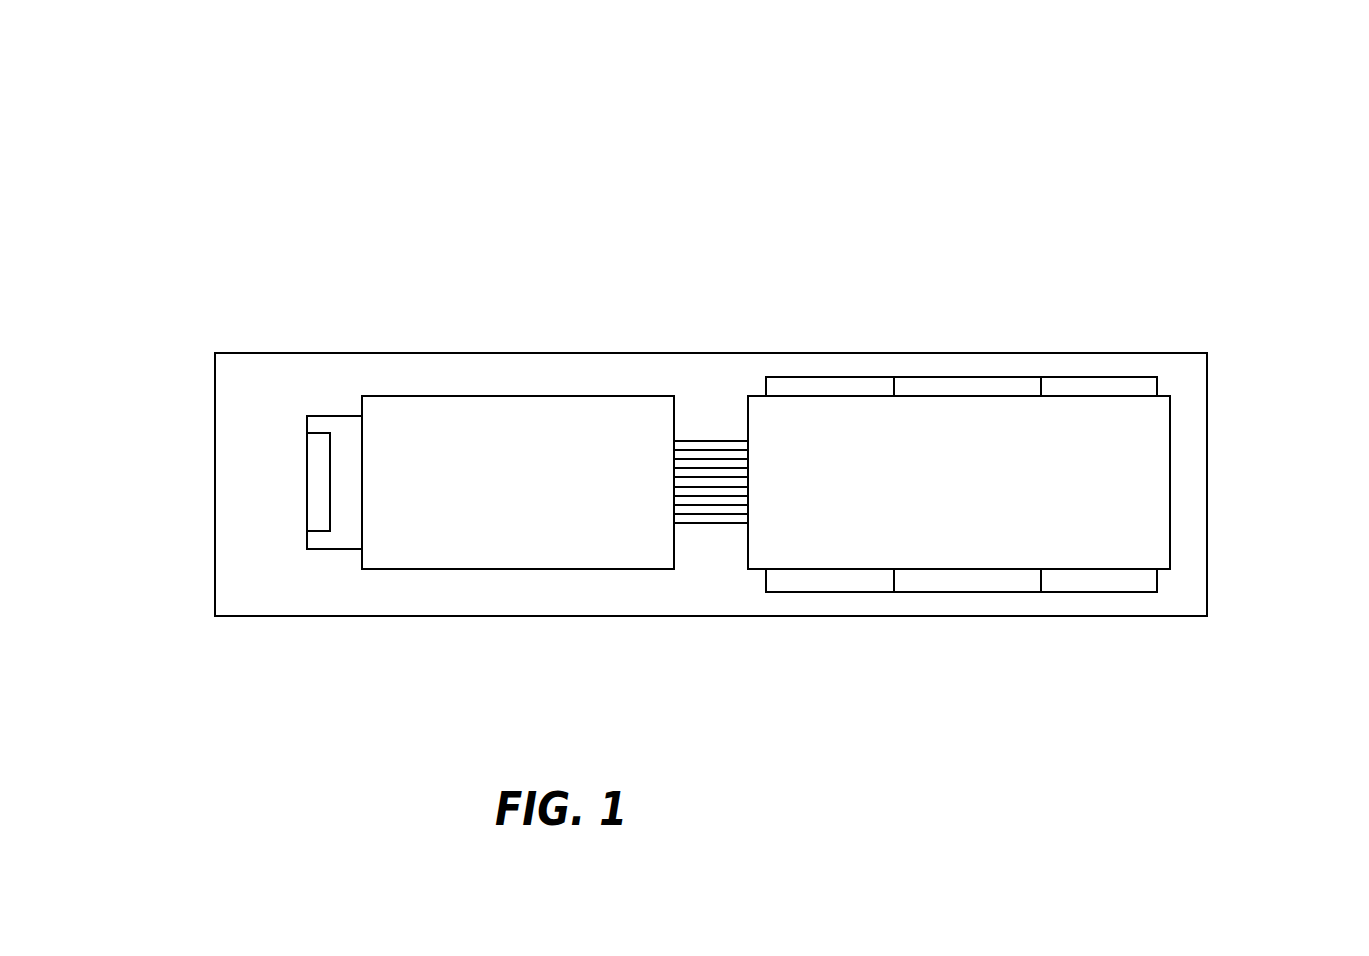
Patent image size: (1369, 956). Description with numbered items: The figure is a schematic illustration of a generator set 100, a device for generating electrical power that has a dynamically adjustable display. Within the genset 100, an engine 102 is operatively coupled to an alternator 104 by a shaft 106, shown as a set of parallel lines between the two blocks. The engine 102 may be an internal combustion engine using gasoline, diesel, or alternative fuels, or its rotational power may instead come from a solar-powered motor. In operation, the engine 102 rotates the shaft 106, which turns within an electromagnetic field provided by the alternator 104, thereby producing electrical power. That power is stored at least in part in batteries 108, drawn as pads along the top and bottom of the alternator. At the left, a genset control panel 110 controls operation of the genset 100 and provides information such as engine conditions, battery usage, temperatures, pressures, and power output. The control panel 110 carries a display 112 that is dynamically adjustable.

The generator set 100 is at (174, 90).
The engine 102 is at (1168, 448).
The alternator 104 is at (505, 395).
The shaft 106 is at (698, 440).
The batteries 108 is at (1087, 378).
The genset control panel 110 is at (326, 415).
The display 112 is at (308, 487).